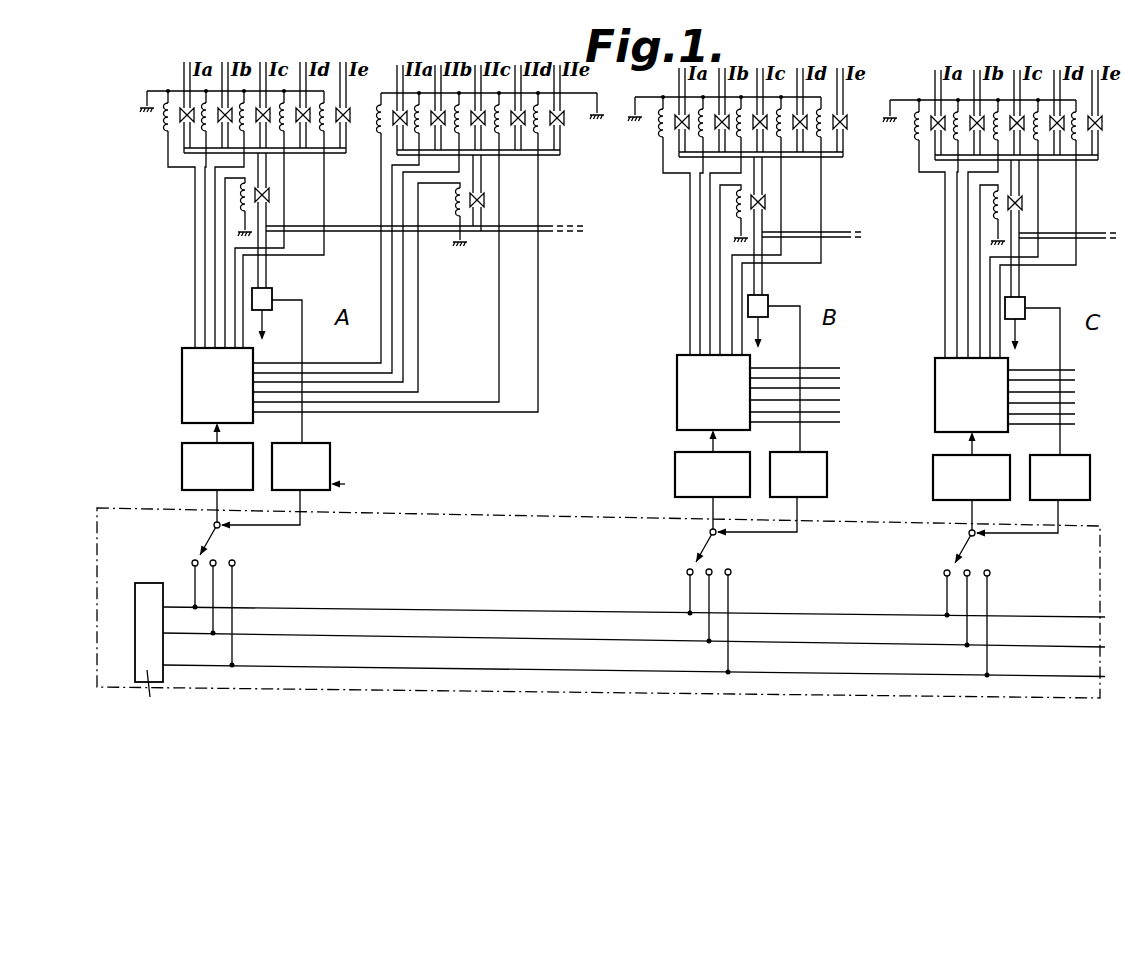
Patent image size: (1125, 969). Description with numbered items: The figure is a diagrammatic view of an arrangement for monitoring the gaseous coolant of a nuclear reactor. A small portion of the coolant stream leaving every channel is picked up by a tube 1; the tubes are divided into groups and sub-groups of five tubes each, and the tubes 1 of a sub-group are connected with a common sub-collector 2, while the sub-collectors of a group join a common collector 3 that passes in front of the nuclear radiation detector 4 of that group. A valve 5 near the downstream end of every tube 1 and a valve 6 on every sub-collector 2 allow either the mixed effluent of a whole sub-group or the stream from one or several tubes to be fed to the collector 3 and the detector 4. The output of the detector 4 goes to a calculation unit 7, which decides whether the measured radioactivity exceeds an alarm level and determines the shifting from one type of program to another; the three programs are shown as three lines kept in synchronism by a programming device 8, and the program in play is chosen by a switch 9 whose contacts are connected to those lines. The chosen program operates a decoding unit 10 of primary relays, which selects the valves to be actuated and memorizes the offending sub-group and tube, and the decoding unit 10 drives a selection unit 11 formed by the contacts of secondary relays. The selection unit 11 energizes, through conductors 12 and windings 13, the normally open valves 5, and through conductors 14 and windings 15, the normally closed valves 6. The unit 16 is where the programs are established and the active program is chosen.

The tube 1 is at (937, 88).
The sub-collector 2 is at (1015, 172).
The collector 3 is at (1020, 290).
The nuclear radiation detector 4 is at (1028, 303).
The valve 5 is at (905, 160).
The valve 6 is at (1052, 194).
The calculation unit 7 is at (1083, 540).
The programming device 8 is at (148, 600).
The switch 9 is at (960, 550).
The decoding unit 10 is at (950, 472).
The selection unit 11 is at (942, 417).
The conductors 12 is at (1020, 372).
The windings 13 is at (920, 124).
The conductors 14 is at (442, 363).
The windings 15 is at (1025, 218).
The unit 16 is at (500, 515).